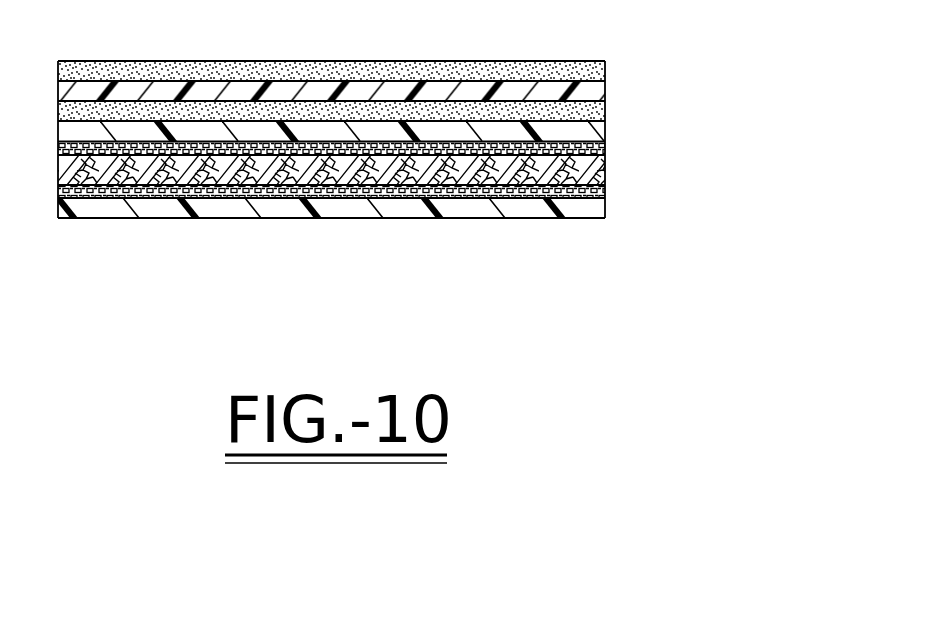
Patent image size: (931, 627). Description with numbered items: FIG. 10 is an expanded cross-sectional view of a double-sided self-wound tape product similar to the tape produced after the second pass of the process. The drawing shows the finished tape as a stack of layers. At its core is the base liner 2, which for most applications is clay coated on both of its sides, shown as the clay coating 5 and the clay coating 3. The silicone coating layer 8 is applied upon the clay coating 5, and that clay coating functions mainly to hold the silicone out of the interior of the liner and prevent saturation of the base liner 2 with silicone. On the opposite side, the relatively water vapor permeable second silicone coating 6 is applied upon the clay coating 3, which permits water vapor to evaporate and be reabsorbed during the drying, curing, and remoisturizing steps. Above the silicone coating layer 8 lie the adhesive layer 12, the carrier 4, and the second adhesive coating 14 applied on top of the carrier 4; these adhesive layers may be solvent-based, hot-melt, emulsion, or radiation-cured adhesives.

The second adhesive coating 14 is at (600, 63).
The carrier 4 is at (603, 91).
The adhesive layer 12 is at (603, 113).
The silicone coating layer 8 is at (603, 135).
The clay coating 5 is at (603, 150).
The base liner 2 is at (603, 172).
The clay coating 3 is at (603, 197).
The second silicone coating 6 is at (603, 215).